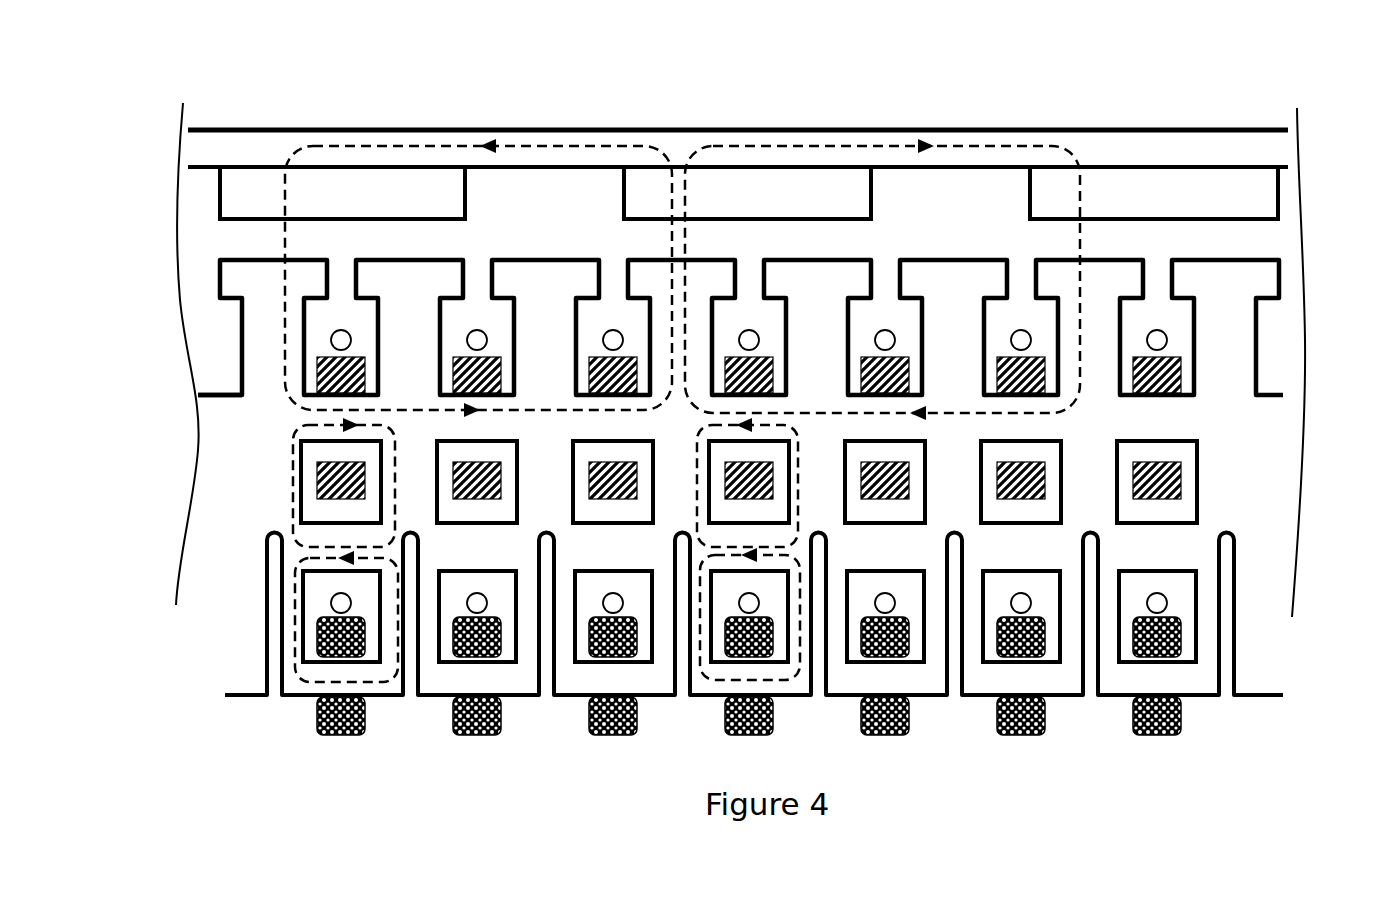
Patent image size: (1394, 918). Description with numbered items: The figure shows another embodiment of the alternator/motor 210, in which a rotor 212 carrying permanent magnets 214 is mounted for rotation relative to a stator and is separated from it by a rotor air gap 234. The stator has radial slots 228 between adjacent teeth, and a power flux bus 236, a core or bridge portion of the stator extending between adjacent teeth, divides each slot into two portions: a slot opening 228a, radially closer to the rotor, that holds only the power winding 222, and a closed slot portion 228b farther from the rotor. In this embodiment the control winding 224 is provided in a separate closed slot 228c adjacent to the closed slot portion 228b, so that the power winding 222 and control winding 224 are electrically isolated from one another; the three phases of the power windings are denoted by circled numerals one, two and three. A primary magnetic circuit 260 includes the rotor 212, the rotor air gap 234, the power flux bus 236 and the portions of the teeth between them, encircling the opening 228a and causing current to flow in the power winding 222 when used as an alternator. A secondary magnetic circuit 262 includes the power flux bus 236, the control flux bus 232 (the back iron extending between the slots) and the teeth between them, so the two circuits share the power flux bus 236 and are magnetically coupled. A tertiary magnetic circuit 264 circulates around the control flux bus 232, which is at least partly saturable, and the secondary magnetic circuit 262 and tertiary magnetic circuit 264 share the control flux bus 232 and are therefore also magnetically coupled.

The alternator/motor 210 is at (195, 103).
The rotor 212 is at (1230, 138).
The permanent magnets 214 is at (248, 203).
The rotor air gap 234 is at (1228, 237).
The slots 228 is at (693, 325).
The slot opening for power winding 228a is at (303, 328).
The power flux bus 236 is at (230, 393).
The power winding 222 is at (1180, 480).
The closed slot portion 228b is at (310, 473).
The closed slot 228c is at (320, 643).
The control winding 224 is at (320, 720).
The primary magnetic circuit 260 is at (282, 375).
The secondary magnetic circuit 262 is at (293, 500).
The control flux bus 232 is at (303, 537).
The tertiary magnetic circuit 264 is at (295, 622).